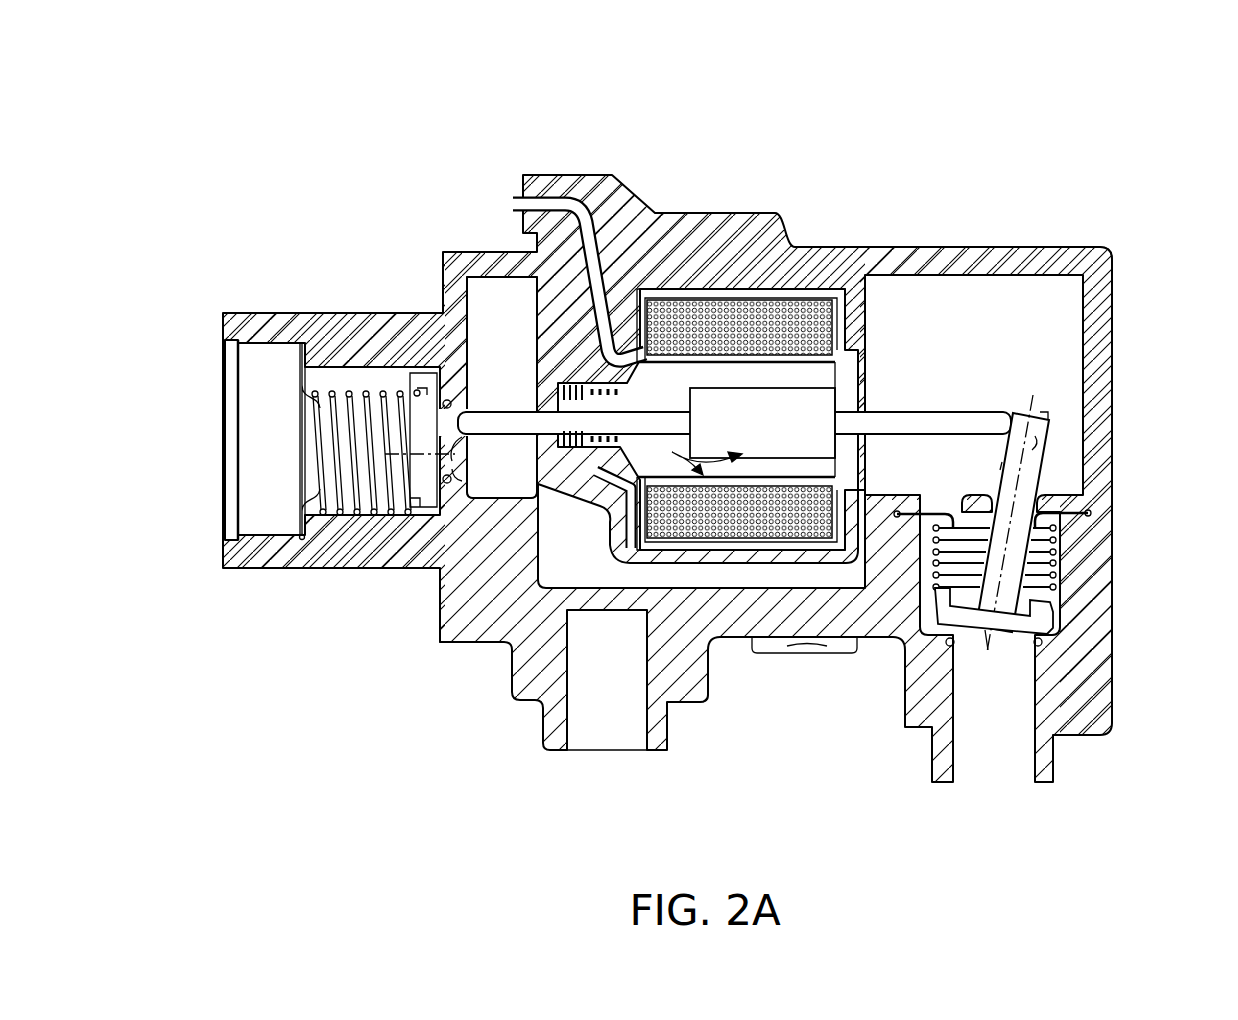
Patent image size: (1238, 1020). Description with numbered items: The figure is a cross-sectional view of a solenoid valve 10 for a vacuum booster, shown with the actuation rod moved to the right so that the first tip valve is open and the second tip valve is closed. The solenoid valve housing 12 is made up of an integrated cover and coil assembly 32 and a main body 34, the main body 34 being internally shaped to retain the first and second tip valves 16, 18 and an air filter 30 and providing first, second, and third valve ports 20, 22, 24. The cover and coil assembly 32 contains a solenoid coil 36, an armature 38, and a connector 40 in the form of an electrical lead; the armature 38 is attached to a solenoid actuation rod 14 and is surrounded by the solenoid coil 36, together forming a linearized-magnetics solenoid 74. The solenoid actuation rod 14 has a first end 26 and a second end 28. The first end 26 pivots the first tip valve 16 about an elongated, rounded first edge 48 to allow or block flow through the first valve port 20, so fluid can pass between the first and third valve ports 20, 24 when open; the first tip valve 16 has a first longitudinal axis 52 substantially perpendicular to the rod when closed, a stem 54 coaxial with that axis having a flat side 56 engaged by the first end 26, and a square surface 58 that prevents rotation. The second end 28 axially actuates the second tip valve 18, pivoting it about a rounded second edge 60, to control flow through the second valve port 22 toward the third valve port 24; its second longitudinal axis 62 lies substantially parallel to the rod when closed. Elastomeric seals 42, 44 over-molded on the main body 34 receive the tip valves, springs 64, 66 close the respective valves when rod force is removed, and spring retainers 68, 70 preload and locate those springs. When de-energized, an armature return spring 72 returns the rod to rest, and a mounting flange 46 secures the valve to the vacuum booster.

The solenoid valve 10 is at (672, 136).
The solenoid valve housing 12 is at (1120, 291).
The solenoid actuation rod 14 is at (910, 410).
The first tip valve 16 is at (1032, 610).
The second tip valve 18 is at (403, 382).
The first valve port 20 is at (1020, 785).
The second valve port 22 is at (223, 432).
The third valve port 24 is at (581, 750).
The first end 26 is at (1005, 411).
The second end 28 is at (468, 448).
The air filter 30 is at (252, 503).
The cover and coil assembly 32 is at (1097, 247).
The main body 34 is at (745, 647).
The solenoid coil 36 is at (813, 300).
The armature 38 is at (768, 388).
The connector 40 is at (577, 178).
The elastomeric seal 42 is at (1058, 645).
The elastomeric seal 44 is at (460, 400).
The mounting flange 46 is at (829, 655).
The first edge 48 is at (1042, 642).
The first longitudinal axis 52 is at (1040, 440).
The stem 54 is at (1050, 413).
The flat side 56 is at (994, 468).
The surface 58 is at (988, 650).
The second edge 60 is at (432, 547).
The second longitudinal axis 62 is at (466, 470).
The spring 64 is at (1080, 558).
The spring 66 is at (340, 375).
The spring retainer 68 is at (1092, 515).
The spring retainer 70 is at (297, 535).
The armature return spring 72 is at (556, 384).
The linearized-magnetics solenoid 74 is at (691, 454).